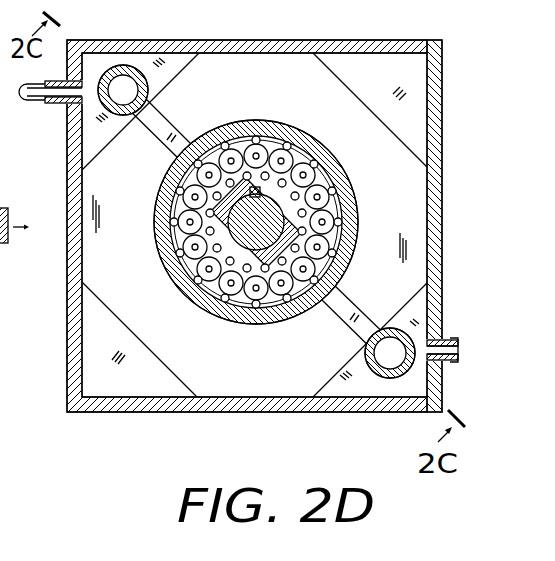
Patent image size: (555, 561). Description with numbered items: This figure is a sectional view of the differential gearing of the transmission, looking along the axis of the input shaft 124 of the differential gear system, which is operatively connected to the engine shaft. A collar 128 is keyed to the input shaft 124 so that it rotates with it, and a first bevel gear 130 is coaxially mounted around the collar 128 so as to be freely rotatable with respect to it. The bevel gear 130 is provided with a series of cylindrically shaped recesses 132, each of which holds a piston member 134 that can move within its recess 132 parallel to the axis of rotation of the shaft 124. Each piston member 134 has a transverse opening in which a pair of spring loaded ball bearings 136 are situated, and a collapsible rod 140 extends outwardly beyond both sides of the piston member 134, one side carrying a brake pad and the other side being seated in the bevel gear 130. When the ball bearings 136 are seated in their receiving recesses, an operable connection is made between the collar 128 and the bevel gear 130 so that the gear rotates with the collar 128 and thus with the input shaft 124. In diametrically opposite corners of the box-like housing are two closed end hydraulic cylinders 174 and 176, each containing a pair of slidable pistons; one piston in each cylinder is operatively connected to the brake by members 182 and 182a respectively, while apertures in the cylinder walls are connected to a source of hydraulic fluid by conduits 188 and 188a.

The input shaft 124 is at (240, 228).
The collar 128 is at (236, 241).
The first bevel gear 130 is at (349, 170).
The cylindrically shaped recesses 132 is at (248, 144).
The piston member 134 is at (323, 199).
The spring loaded ball bearings 136 is at (316, 162).
The collapsible rod 140 is at (256, 153).
The closed end hydraulic cylinder 174 is at (123, 80).
The closed end hydraulic cylinder 176 is at (384, 364).
The member 182 is at (158, 133).
The member 182a is at (338, 315).
The conduit 188 is at (38, 100).
The conduit 188a is at (453, 340).